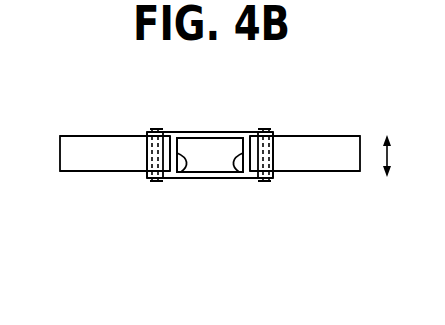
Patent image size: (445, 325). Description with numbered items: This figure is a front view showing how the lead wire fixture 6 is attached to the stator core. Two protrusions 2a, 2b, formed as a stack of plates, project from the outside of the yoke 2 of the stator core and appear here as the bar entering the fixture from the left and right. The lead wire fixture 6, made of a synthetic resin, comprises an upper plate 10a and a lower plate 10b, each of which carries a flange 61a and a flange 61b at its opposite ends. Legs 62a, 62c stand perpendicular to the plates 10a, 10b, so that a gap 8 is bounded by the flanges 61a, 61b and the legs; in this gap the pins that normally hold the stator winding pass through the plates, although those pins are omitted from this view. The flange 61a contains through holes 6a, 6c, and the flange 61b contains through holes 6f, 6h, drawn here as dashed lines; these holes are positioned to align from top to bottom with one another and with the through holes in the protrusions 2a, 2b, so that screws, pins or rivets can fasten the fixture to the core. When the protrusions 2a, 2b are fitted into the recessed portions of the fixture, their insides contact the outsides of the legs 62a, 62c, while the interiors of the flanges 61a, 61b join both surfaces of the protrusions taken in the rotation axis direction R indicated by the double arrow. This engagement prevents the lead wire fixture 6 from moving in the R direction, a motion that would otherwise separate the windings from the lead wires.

The yoke 2 is at (62, 138).
The protrusion 2a is at (145, 152).
The protrusion 2b is at (273, 153).
The lead wire fixture 6 is at (202, 186).
The through hole 6a is at (153, 129).
The through hole 6c is at (262, 129).
The through hole 6f is at (150, 181).
The through hole 6h is at (261, 182).
The gap 8 is at (190, 145).
The plate 10a is at (207, 131).
The plate 10b is at (222, 180).
The flange 61a is at (149, 130).
The flange 61b is at (147, 181).
The leg 62a is at (181, 178).
The leg 62c is at (242, 178).
The rotation axis direction R is at (396, 156).